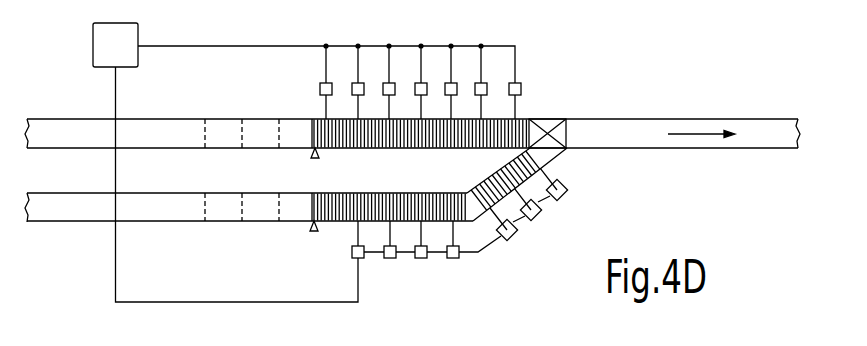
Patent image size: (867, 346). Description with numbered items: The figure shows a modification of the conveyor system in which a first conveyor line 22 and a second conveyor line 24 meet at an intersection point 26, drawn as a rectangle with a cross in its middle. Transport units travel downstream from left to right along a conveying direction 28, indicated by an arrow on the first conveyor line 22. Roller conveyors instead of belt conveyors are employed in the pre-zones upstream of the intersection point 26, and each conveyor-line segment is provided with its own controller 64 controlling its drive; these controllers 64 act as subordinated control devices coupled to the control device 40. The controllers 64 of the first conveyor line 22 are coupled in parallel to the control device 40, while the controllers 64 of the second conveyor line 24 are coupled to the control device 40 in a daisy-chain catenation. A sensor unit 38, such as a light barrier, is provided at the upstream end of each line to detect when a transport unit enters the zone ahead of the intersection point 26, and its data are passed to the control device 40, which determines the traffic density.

The first conveyor line 22 is at (181, 146).
The second conveyor line 24 is at (181, 220).
The intersection point 26 is at (561, 110).
The conveying direction 28 is at (690, 134).
The sensor unit 38 is at (315, 158).
The control device 40 is at (304, 162).
The controller 64 is at (320, 89).